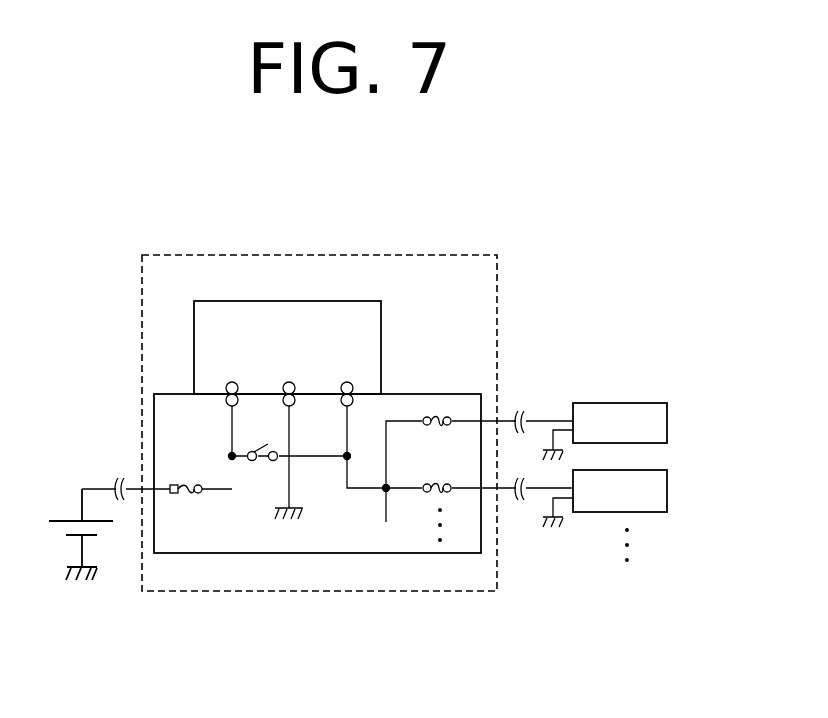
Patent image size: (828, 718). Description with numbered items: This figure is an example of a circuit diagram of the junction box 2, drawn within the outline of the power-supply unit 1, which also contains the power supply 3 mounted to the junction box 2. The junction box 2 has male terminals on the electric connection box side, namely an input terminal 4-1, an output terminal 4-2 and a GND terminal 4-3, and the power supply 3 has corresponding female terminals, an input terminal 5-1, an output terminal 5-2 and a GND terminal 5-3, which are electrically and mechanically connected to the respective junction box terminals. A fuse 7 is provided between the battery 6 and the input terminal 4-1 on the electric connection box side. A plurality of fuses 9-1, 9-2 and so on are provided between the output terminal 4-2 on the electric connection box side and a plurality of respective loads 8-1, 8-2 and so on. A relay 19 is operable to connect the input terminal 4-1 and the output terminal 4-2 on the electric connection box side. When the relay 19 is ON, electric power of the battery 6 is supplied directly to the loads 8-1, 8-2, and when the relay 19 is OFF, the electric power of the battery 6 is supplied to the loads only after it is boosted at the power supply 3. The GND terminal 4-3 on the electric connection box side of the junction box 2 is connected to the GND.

The power-supply unit 1 is at (319, 255).
The junction box 2 is at (177, 393).
The power supply 3 is at (294, 301).
The input terminal 4-1 is at (236, 404).
The output terminal 4-2 is at (351, 404).
The GND terminal 4-3 is at (293, 404).
The input terminal 5-1 is at (231, 382).
The output terminal 5-2 is at (346, 382).
The GND terminal 5-3 is at (288, 382).
The battery 6 is at (70, 519).
The fuse 7 is at (186, 486).
The load 8-1 is at (667, 425).
The load 8-2 is at (667, 495).
The fuse 9-1 is at (434, 429).
The fuse 9-2 is at (431, 497).
The relay 19 is at (267, 467).